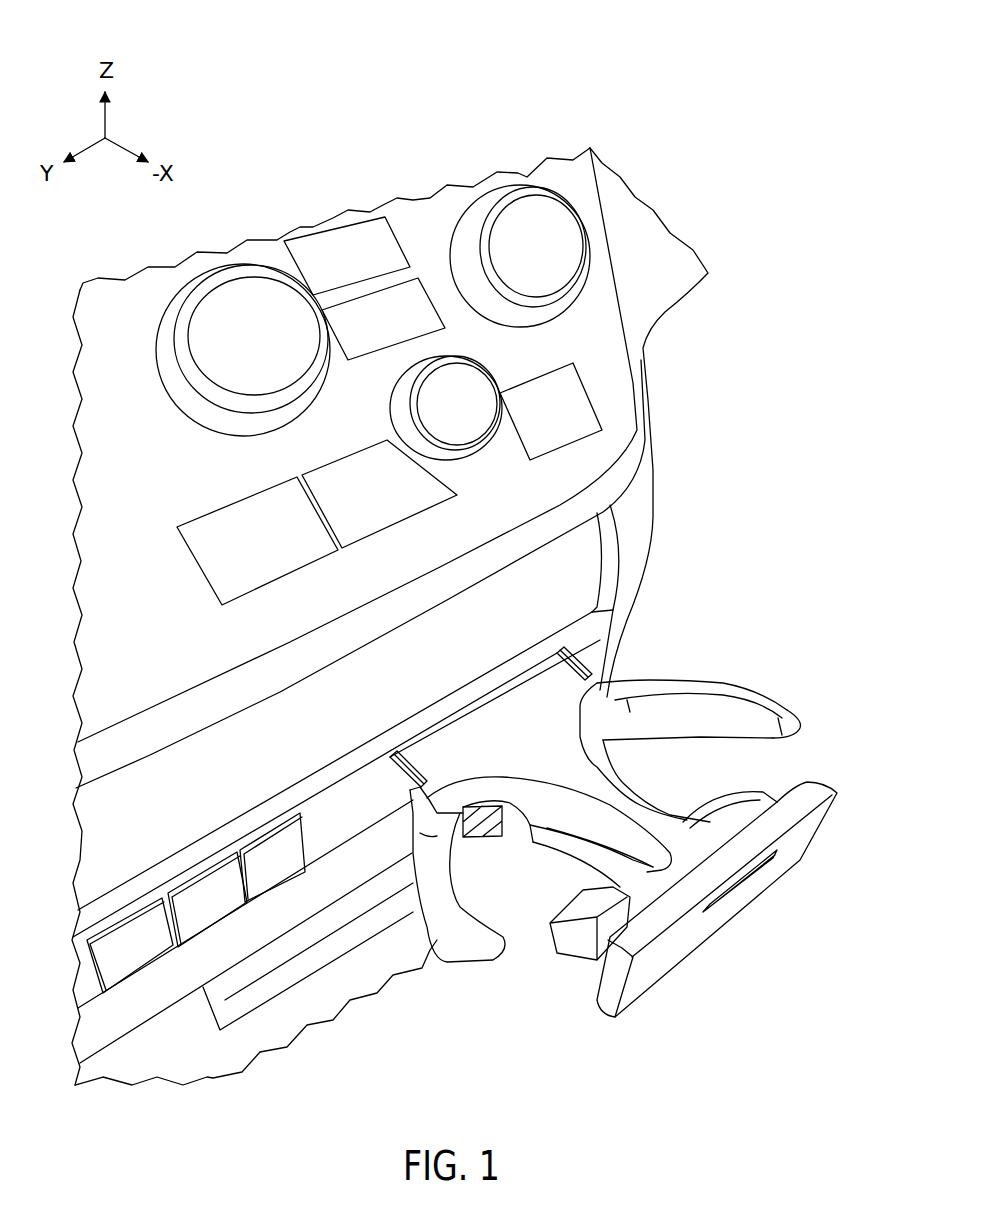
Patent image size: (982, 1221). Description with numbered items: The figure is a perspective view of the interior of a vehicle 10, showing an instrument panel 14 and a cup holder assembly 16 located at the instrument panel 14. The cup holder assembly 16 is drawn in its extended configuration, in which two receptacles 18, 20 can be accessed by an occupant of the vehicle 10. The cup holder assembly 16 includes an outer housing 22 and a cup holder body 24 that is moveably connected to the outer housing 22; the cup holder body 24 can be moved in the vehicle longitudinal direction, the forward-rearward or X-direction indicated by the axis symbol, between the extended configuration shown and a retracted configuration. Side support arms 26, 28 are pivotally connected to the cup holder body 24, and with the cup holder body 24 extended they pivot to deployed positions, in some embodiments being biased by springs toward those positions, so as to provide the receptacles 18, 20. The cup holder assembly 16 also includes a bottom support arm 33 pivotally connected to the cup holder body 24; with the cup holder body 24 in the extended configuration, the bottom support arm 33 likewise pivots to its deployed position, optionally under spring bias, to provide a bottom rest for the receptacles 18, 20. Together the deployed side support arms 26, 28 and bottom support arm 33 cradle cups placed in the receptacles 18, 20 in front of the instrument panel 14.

The vehicle 10 is at (667, 125).
The instrument panel 14 is at (631, 444).
The cup holder assembly 16 is at (709, 625).
The receptacle 18 is at (481, 916).
The receptacle 20 is at (719, 732).
The outer housing 22 is at (605, 646).
The cup holder body 24 is at (567, 844).
The side support arm 26 is at (427, 927).
The side support arm 28 is at (760, 732).
The bottom support arm 33 is at (623, 878).